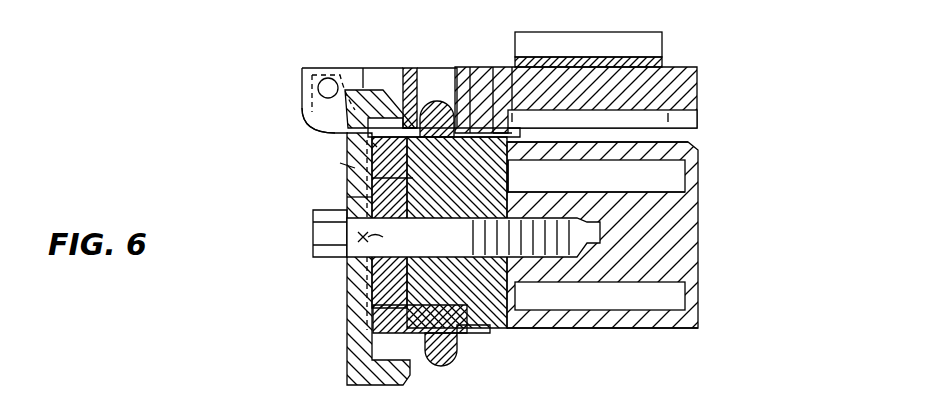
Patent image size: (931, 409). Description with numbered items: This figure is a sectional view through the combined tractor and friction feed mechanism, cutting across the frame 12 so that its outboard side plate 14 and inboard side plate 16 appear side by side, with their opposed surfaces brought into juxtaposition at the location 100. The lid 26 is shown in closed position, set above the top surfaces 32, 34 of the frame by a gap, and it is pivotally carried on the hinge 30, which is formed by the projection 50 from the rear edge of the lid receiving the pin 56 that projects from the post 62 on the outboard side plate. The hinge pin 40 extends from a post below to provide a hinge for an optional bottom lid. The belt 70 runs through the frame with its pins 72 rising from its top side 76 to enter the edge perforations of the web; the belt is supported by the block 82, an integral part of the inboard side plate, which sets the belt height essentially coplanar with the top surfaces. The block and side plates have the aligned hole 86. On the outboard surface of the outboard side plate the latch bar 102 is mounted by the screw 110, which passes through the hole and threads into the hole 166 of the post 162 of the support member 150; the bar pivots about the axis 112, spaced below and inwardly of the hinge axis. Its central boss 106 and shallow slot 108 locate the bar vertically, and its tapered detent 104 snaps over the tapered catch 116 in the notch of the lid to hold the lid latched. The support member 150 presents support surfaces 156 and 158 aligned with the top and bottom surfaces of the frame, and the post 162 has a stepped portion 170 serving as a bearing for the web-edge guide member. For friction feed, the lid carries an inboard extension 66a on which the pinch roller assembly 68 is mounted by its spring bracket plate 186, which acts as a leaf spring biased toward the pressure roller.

The frame 12 is at (397, 9).
The outboard side plate 14 is at (362, 332).
The inboard side plate 16 is at (500, 330).
The lid 26 is at (480, 75).
The hinge 30 is at (298, 80).
The top surface 32 is at (373, 143).
The top surface 34 is at (493, 110).
The hinge pin 40 is at (278, 7).
The projection 50 is at (342, 68).
The pin 56 is at (321, 78).
The post 62 is at (310, 120).
The inboard extension 66a is at (697, 82).
The pinch roller assembly 68 is at (664, 44).
The belt 70 is at (460, 330).
The pins 72 is at (448, 115).
The top side 76 is at (465, 80).
The block 82 is at (372, 178).
The hole 86 is at (442, 202).
The juxtaposed surfaces 100 is at (413, 303).
The latch bar 102 is at (347, 197).
The detent 104 is at (392, 100).
The central boss 106 is at (420, 217).
The slot 108 is at (340, 163).
The screw 110 is at (312, 240).
The axis 112 is at (386, 241).
The catch 116 is at (403, 112).
The support member 150 is at (698, 220).
The support surface 156 is at (695, 140).
The support surface 158 is at (673, 330).
The post 162 is at (622, 186).
The hole 166 is at (550, 214).
The stepped portion 170 is at (515, 200).
The bracket plate 186 is at (610, 55).